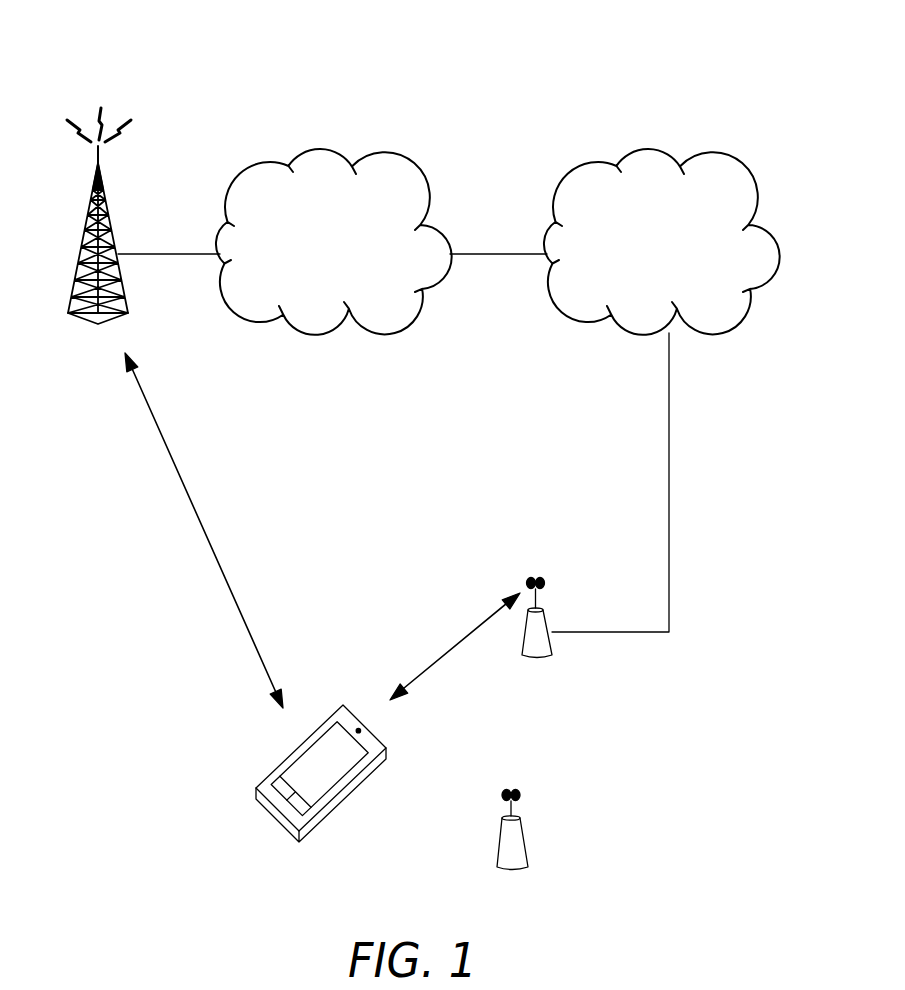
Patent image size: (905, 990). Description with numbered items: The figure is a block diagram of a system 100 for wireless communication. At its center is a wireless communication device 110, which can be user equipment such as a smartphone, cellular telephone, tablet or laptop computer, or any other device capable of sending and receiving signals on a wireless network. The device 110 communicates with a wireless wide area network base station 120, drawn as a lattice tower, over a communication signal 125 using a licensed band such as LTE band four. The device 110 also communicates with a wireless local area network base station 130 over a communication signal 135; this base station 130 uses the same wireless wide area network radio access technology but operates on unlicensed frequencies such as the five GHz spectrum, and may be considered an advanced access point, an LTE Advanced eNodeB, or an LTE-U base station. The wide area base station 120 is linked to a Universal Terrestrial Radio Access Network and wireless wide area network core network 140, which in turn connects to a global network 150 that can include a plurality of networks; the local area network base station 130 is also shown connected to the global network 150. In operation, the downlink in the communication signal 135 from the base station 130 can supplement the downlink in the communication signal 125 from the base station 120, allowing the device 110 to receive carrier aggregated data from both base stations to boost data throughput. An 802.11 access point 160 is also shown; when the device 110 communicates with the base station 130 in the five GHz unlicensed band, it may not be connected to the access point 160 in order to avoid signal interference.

The system 100 is at (778, 58).
The wireless communication device 110 is at (343, 705).
The wireless wide area network base station 120 is at (85, 228).
The communication signal 125 is at (210, 549).
The wireless local area network base station 130 is at (536, 658).
The communication signal 135 is at (448, 651).
The Universal Terrestrial Radio Access Network and wireless wide area network core n 140 is at (326, 150).
The global network 150 is at (655, 150).
The 802.11 access point 160 is at (500, 836).